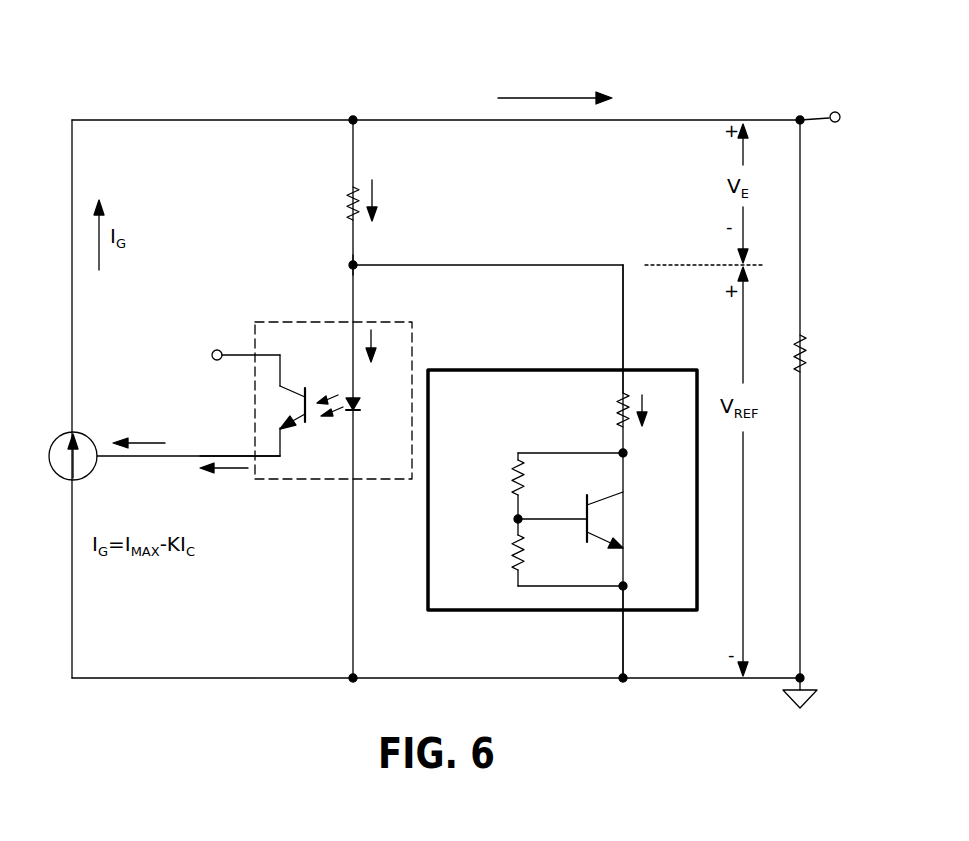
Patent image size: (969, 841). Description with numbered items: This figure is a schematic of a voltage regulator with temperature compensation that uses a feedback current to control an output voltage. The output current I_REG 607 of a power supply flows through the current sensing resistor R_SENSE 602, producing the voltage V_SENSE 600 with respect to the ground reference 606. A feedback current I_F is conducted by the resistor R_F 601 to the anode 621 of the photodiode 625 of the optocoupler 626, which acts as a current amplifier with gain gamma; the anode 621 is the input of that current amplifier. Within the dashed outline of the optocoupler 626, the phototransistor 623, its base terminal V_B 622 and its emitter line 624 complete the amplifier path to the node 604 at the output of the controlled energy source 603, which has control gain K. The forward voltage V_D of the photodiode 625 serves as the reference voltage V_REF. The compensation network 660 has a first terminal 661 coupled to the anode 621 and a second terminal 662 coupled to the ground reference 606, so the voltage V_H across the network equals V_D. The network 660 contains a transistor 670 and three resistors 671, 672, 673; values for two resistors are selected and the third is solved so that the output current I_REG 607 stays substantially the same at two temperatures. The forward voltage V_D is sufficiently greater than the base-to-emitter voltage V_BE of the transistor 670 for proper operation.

The voltage V_SENSE 600 is at (828, 114).
The resistor R_F 601 is at (343, 188).
The current sensing resistor R_SENSE 602 is at (814, 336).
The controlled energy source 603 is at (62, 426).
The current source output node 604 is at (105, 463).
The ground reference 606 is at (810, 670).
The output current I_REG 607 is at (527, 85).
The anode of photodiode 621 is at (342, 293).
The base bias terminal VB 622 is at (231, 348).
The phototransistor 623 is at (293, 384).
The emitter output line 624 is at (238, 452).
The photodiode 625 is at (345, 423).
The optocoupler 626 is at (258, 482).
The compensation network 660 is at (562, 364).
The first terminal of network 661 is at (630, 332).
The second terminal of network 662 is at (636, 632).
The transistor 670 is at (605, 518).
The resistor R1 671 is at (610, 398).
The resistor R2 672 is at (507, 464).
The resistor R3 673 is at (508, 566).